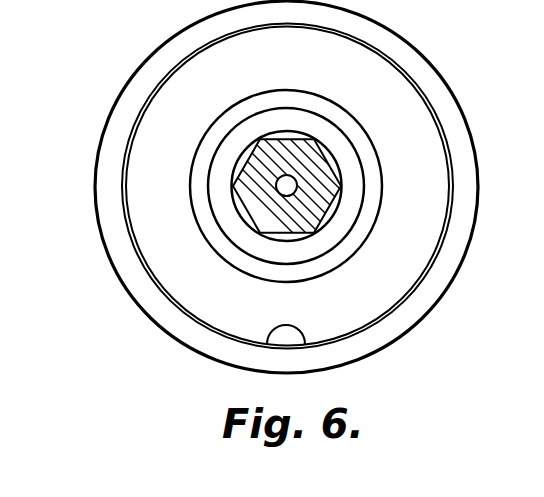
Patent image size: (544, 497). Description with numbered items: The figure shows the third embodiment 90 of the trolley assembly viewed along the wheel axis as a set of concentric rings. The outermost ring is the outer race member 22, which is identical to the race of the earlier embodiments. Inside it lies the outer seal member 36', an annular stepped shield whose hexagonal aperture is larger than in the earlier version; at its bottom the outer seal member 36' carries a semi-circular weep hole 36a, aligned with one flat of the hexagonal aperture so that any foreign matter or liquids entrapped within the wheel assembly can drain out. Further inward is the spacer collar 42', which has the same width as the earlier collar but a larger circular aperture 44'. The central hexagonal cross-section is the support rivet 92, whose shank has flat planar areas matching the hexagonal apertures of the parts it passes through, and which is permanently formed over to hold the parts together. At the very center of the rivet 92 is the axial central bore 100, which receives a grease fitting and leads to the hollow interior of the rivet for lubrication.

The outer race member 22 is at (358, 33).
The third embodiment of the trolley assembly 90 is at (478, 33).
The outer seal member 36' is at (287, 186).
The weep hole 36a is at (297, 330).
The spacer collar 42' is at (286, 184).
The circular aperture 44' is at (305, 148).
The central circular passageway or bore 100 is at (297, 180).
The support rivet 92 is at (340, 210).